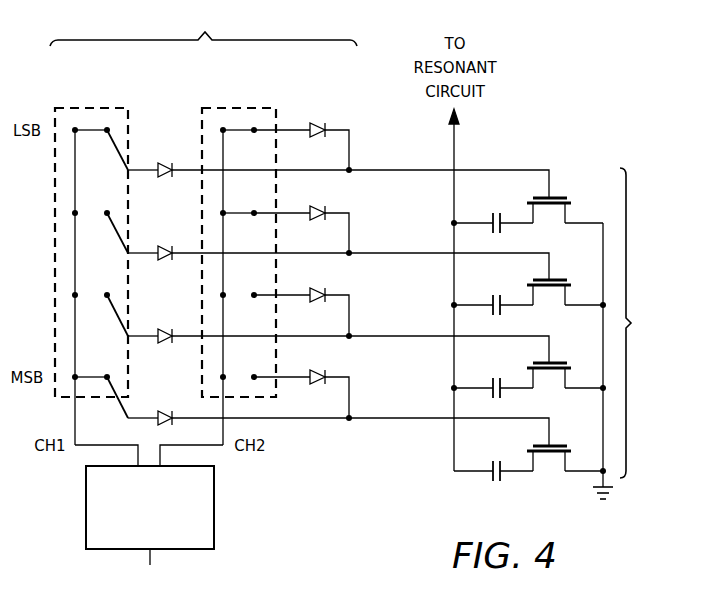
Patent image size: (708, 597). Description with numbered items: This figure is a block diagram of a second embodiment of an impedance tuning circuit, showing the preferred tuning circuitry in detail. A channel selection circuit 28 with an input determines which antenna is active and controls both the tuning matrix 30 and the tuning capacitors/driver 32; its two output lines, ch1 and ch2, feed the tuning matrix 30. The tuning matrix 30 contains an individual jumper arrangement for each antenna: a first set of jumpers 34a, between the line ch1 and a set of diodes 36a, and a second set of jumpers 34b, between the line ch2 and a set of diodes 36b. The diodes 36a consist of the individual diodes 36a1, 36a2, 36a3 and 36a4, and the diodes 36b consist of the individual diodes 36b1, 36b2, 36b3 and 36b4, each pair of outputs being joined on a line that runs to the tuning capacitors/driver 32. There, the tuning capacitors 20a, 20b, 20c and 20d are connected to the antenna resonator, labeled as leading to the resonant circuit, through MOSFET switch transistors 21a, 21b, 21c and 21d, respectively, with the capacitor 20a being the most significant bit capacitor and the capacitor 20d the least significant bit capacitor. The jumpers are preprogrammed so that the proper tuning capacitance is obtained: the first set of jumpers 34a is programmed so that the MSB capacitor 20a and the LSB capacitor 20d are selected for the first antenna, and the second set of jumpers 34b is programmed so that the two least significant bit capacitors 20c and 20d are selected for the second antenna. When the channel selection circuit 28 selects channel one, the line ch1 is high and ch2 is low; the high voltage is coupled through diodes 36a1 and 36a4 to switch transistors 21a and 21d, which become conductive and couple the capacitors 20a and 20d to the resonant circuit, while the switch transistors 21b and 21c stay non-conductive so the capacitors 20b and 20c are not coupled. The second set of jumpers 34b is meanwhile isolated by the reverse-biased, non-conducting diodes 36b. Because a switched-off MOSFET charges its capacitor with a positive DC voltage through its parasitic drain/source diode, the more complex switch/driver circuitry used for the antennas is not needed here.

The tuning matrix 30 is at (203, 26).
The first set of jumpers 34a is at (82, 108).
The second set of jumpers 34b is at (252, 108).
The diodes 36a is at (162, 237).
The diodes 36b is at (326, 238).
The diode 36a1 is at (165, 410).
The diode 36a2 is at (165, 328).
The diode 36a3 is at (165, 245).
The diode 36a4 is at (165, 162).
The diode 36b1 is at (326, 373).
The diode 36b2 is at (326, 291).
The diode 36b3 is at (326, 209).
The diode 36b4 is at (326, 126).
The most significant bit capacitor 20a is at (492, 465).
The tuning capacitor 20b is at (492, 382).
The tuning capacitor 20c is at (492, 299).
The least significant bit capacitor 20d is at (492, 217).
The switch transistor 21a is at (556, 444).
The switch transistor 21b is at (556, 361).
The switch transistor 21c is at (556, 278).
The switch transistor 21d is at (556, 196).
The tuning capacitors/driver 32 is at (561, 317).
The channel selection circuit 28 is at (214, 507).